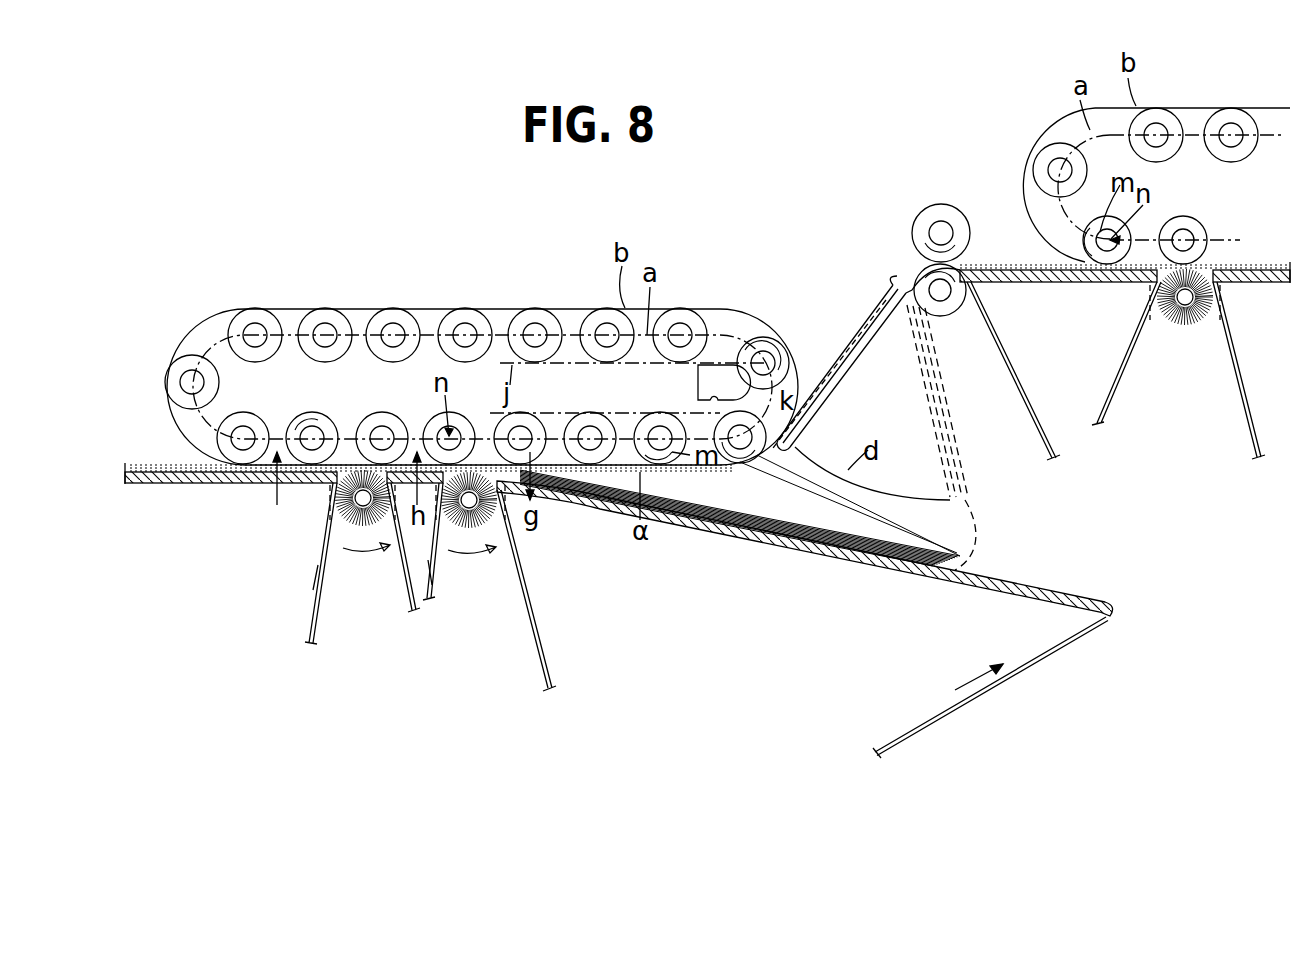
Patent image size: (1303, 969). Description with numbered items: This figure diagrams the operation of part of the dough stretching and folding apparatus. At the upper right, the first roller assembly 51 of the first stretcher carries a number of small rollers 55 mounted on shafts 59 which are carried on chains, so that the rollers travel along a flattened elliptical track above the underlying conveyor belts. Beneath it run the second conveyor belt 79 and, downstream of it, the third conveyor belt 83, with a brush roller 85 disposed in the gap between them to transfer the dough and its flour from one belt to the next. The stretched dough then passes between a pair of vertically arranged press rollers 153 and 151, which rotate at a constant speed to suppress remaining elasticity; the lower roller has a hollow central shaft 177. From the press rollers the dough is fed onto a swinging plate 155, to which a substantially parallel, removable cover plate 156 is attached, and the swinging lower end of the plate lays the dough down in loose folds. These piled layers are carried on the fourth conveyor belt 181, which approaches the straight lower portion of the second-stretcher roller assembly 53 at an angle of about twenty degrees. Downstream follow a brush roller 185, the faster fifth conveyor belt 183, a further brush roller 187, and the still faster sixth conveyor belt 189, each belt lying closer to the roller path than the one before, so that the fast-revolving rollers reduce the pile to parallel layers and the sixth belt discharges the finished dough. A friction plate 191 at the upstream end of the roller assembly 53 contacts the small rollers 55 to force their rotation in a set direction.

The roller assembly 53 is at (357, 305).
The small rollers 55 is at (393, 322).
The shafts 59 is at (465, 335).
The friction plate 191 is at (698, 382).
The brush roller 187 is at (363, 530).
The brush roller 185 is at (470, 530).
The fifth conveyor belt 183 is at (410, 598).
The sixth conveyor belt 189 is at (318, 635).
The press roller 153 is at (925, 222).
The press roller 151 is at (952, 316).
The shaft 177 is at (932, 290).
The cover plate 156 is at (878, 308).
The swinging plate 155 is at (853, 375).
The third conveyor belt 83 is at (1027, 425).
The first roller assembly 51 is at (1027, 205).
The second conveyor belt 79 is at (1245, 432).
The brush roller 85 is at (1178, 318).
The fourth conveyor belt 181 is at (1038, 662).